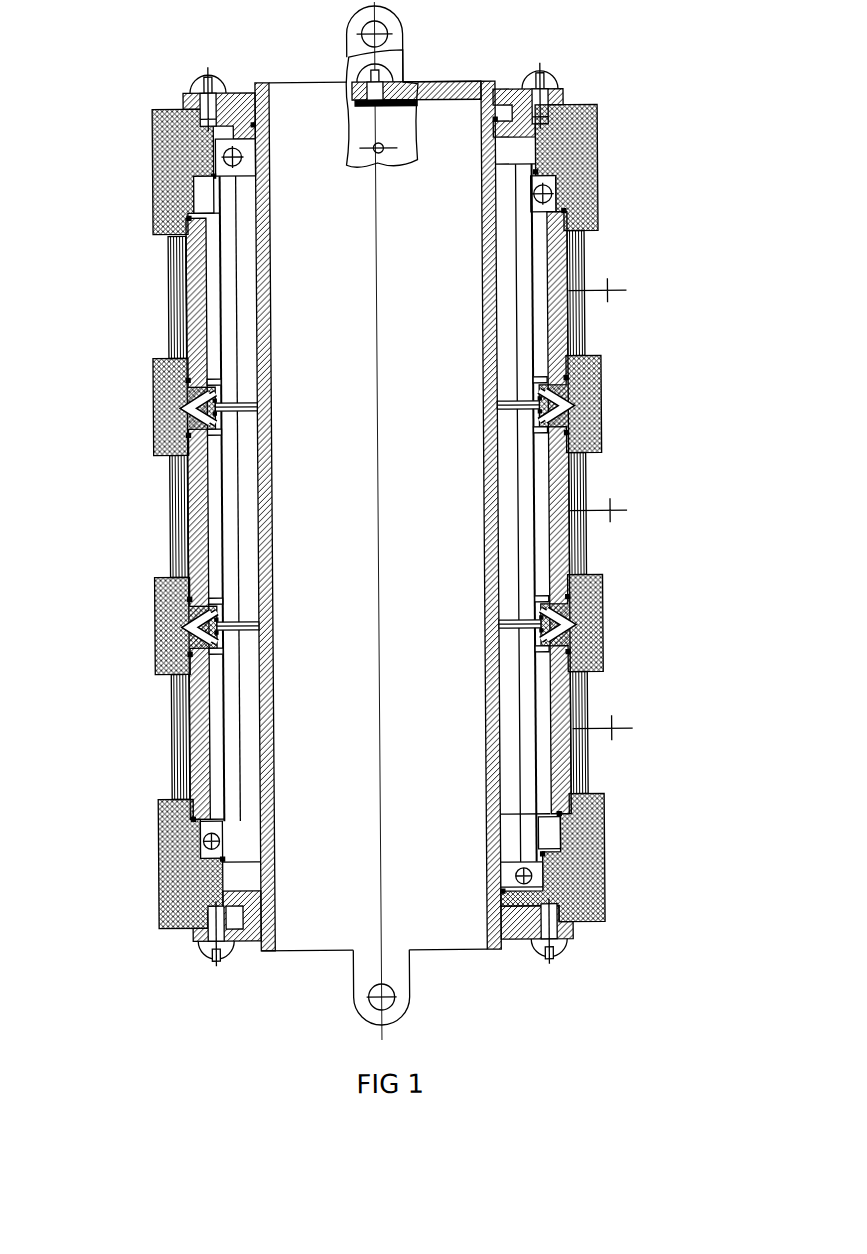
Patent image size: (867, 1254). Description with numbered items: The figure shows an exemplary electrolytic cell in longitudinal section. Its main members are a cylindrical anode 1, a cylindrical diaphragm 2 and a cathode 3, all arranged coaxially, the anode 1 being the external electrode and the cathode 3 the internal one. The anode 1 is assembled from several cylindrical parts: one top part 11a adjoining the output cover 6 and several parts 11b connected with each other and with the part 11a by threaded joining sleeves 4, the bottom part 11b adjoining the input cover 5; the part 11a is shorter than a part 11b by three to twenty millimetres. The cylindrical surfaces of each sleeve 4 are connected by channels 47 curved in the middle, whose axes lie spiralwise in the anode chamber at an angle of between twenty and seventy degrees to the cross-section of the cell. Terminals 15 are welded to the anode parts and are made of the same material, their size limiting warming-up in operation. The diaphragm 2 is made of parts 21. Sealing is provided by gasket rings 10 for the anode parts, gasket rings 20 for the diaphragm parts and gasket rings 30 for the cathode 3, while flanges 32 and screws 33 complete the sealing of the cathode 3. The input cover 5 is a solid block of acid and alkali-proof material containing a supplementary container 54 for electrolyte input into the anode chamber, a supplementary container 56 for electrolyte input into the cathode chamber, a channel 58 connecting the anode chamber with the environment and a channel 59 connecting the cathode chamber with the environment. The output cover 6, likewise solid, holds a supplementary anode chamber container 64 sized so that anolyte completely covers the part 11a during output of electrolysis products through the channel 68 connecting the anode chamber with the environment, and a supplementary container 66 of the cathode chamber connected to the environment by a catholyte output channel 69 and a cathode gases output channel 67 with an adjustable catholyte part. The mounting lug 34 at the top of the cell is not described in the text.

The cylindrical anode 1 is at (170, 704).
The cylindrical diaphragm 2 is at (587, 712).
The cathode 3 is at (256, 725).
The joining sleeve 4 is at (152, 434).
The input cover 5 is at (155, 919).
The output cover 6 is at (155, 114).
The gasket ring for anode parts 10 is at (600, 220).
The top anode part 11a is at (172, 269).
The anode part 11b is at (167, 521).
The terminal 15 is at (631, 729).
The gasket ring for diaphragm parts 20 is at (600, 168).
The diaphragm part 21 is at (224, 308).
The gasket ring for cathode 30 is at (601, 131).
The flange 32 is at (566, 99).
The screw 33 is at (561, 81).
The upper mounting lug 34 is at (352, 45).
The channel 47 is at (601, 426).
The supplementary container 54 is at (601, 826).
The supplementary container 56 is at (600, 860).
The channel 58 is at (155, 855).
The channel 59 is at (600, 888).
The supplementary anode chamber container 64 is at (209, 198).
The supplementary container of the cathode chamber 66 is at (212, 168).
The cathode gases output channel 67 is at (403, 118).
The channel 68 is at (600, 198).
The catholyte output channel 69 is at (155, 145).